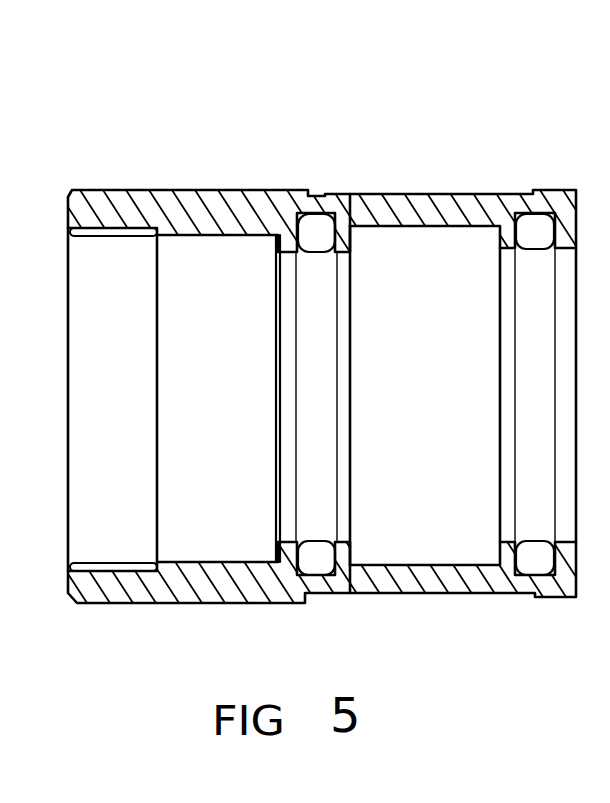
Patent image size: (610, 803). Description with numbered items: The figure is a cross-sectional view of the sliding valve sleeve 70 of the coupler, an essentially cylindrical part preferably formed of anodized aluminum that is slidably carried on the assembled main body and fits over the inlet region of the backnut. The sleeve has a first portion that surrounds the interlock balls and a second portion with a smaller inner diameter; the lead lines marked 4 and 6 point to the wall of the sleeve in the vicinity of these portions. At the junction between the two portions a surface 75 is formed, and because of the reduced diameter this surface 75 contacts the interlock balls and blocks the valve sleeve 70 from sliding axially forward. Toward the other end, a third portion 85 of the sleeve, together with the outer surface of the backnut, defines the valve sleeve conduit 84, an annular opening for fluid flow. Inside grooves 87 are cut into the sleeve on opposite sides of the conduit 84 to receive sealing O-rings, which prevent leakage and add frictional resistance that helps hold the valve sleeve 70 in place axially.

The sliding valve sleeve 70 is at (313, 302).
The first tubular member 4 is at (118, 160).
The second tubular member 6 is at (232, 159).
The third portion 85 is at (416, 174).
The valve sleeve conduit 84 is at (428, 416).
The inside grooves 87 is at (322, 354).
The surface 75 is at (153, 238).